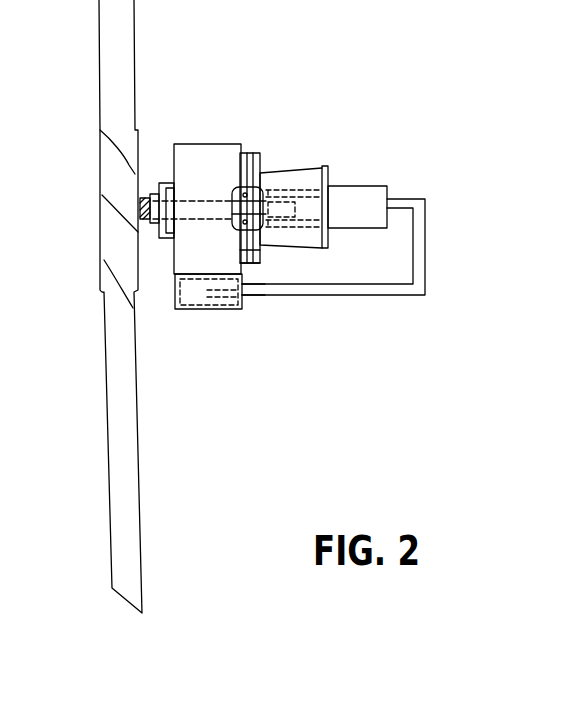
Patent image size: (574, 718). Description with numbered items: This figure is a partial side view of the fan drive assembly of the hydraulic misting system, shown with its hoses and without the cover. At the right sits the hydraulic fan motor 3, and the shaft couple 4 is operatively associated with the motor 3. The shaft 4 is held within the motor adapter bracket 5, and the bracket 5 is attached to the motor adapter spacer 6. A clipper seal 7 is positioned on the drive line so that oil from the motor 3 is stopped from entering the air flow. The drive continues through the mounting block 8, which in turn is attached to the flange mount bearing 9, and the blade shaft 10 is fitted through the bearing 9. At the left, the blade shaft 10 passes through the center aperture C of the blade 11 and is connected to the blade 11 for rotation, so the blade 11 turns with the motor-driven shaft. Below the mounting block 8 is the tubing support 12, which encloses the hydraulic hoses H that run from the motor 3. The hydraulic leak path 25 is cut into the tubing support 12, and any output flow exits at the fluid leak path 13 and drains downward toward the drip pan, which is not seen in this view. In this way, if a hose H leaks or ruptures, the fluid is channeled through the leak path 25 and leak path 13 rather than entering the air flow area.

The hydraulic fan motor 3 is at (368, 186).
The shaft coupling 4 is at (310, 188).
The motor adapter bracket 5 is at (258, 255).
The motor adapter spacer 6 is at (248, 155).
The clipper seal 7 is at (247, 195).
The mounting block 8 is at (195, 144).
The flange mount bearing 9 is at (157, 230).
The blade shaft 10 is at (143, 194).
The blade 11 is at (105, 343).
The tubing support 12 is at (207, 310).
The fluid leak path 13 is at (187, 305).
The hydraulic leak path 25 is at (247, 290).
The center aperture C is at (100, 212).
The hydraulic hoses H is at (427, 245).